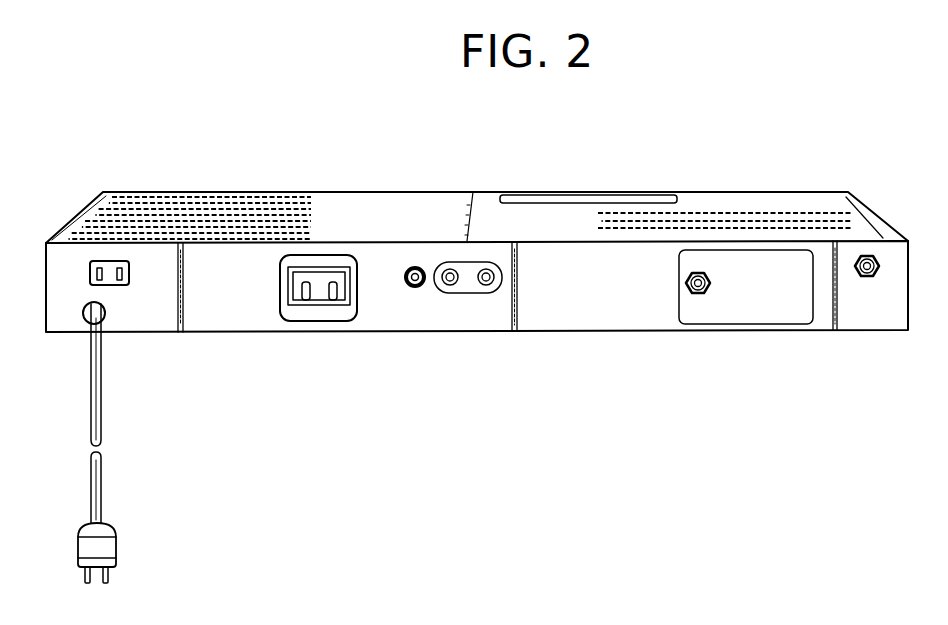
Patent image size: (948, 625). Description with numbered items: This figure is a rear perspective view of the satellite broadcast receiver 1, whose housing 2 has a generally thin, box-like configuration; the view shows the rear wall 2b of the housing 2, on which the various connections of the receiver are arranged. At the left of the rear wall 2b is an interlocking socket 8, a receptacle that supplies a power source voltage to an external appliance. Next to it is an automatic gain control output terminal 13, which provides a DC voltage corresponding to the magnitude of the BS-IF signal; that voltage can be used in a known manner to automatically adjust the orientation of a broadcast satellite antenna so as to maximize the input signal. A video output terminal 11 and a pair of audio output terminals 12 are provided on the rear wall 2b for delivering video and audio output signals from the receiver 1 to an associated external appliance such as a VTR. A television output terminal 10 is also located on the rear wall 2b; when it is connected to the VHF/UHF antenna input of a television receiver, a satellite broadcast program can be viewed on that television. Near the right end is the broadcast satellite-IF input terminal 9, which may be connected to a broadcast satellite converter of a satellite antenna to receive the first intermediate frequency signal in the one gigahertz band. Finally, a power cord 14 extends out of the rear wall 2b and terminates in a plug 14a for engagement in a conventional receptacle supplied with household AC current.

The satellite broadcast receiver 1 is at (850, 138).
The housing 2 is at (852, 334).
The rear wall 2b is at (628, 317).
The interlocking socket 8 is at (112, 267).
The broadcast satellite-IF input terminal 9 is at (873, 256).
The television output terminal 10 is at (700, 272).
The video output terminal 11 is at (415, 266).
The audio output terminals 12 is at (450, 268).
The automatic gain control output terminal 13 is at (317, 280).
The power cord 14 is at (102, 423).
The plug 14a is at (117, 548).